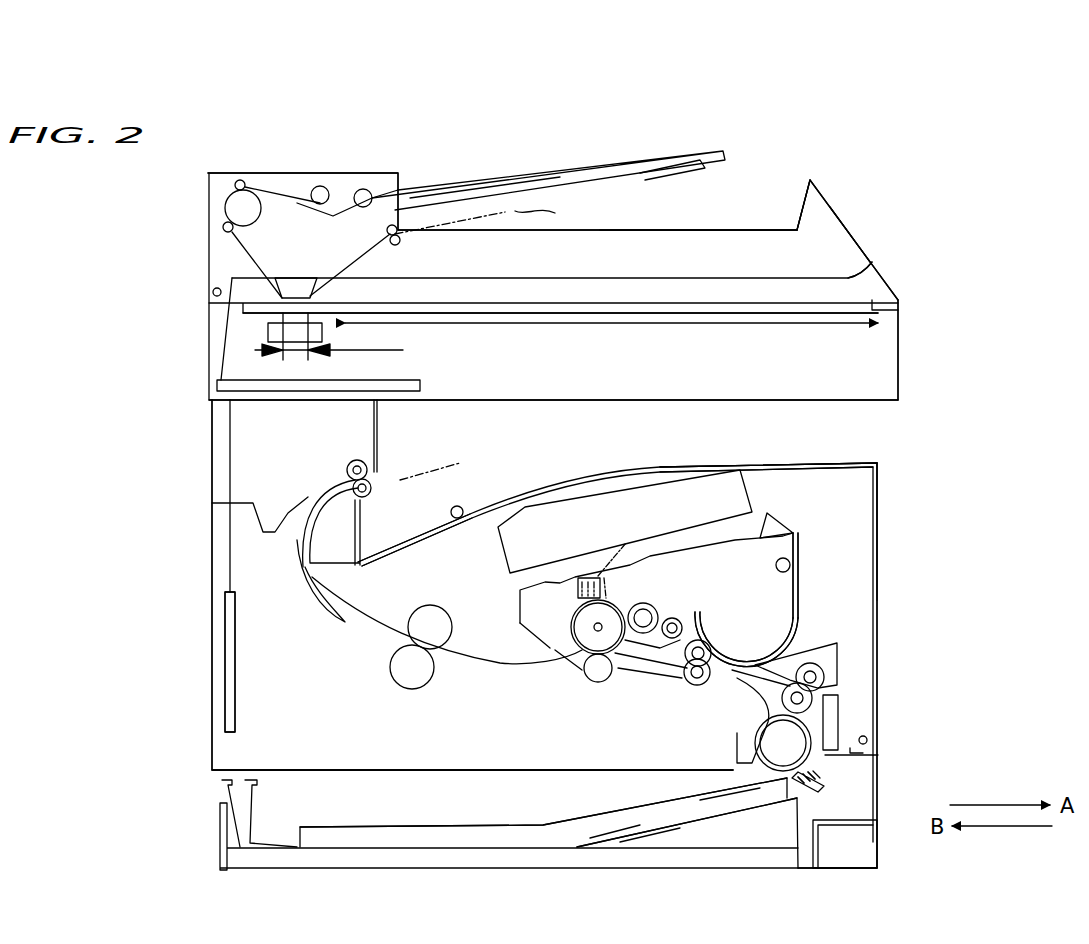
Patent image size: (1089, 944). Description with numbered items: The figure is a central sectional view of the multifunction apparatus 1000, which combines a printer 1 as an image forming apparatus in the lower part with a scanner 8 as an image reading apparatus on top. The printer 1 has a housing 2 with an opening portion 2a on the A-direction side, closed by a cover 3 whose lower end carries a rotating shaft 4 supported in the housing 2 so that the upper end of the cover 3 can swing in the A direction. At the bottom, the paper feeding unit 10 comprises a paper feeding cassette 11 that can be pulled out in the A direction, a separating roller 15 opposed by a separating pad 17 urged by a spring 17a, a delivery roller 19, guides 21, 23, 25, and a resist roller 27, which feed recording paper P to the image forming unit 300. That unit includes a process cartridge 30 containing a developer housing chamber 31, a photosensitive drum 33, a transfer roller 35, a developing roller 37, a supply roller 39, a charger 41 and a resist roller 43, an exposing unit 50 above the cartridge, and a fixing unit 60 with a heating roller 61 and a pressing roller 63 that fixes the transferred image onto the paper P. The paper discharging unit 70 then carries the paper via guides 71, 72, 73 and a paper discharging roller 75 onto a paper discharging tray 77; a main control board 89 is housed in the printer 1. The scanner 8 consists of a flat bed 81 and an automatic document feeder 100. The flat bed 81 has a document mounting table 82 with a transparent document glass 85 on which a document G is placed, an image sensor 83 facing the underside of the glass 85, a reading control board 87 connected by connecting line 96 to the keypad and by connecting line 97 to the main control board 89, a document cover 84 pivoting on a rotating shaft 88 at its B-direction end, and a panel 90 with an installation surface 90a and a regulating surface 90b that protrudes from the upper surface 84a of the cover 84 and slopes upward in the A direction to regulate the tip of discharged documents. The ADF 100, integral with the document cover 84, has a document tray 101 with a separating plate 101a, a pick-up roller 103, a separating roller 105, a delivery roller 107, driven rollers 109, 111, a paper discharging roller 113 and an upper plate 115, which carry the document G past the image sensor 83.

The printer 1 is at (893, 618).
The housing 2 is at (212, 713).
The opening portion 2a is at (865, 468).
The cover 3 is at (878, 507).
The rotating shaft 4 is at (868, 740).
The scanner 8 is at (917, 294).
The paper feeding unit 10 is at (628, 766).
The paper feeding cassette 11 is at (878, 810).
The separating roller 15 is at (802, 734).
The separating pad 17 is at (816, 766).
The spring 17a is at (816, 792).
The delivery roller 19 is at (824, 673).
The guide 21 is at (813, 694).
The guide 23 is at (817, 660).
The guide 25 is at (768, 703).
The resist roller 27 is at (692, 684).
The process cartridge 30 is at (823, 588).
The developer housing chamber 31 is at (797, 562).
The photosensitive drum 33 is at (590, 625).
The transfer roller 35 is at (596, 683).
The developing roller 37 is at (646, 609).
The supply roller 39 is at (675, 622).
The charger 41 is at (597, 574).
The resist roller 43 is at (705, 648).
The exposing unit 50 is at (705, 485).
The fixing unit 60 is at (446, 663).
The heating roller 61 is at (428, 612).
The pressing roller 63 is at (405, 673).
The paper discharging unit 70 is at (258, 617).
The guide 71 is at (313, 612).
The guide 72 is at (333, 436).
The guide 73 is at (330, 531).
The paper discharging roller 75 is at (368, 480).
The paper discharging tray 77 is at (459, 518).
The flat bed 81 is at (852, 403).
The document mounting table 82 is at (888, 376).
The image sensor 83 is at (290, 332).
The document cover 84 is at (750, 241).
The upper surface 84a is at (698, 229).
The document glass 85 is at (654, 302).
The reading control board 87 is at (216, 386).
The rotating shaft 88 is at (212, 292).
The main control board 89 is at (236, 700).
The panel 90 is at (826, 196).
The installation surface 90a is at (846, 224).
The regulating surface 90b is at (799, 196).
The connecting line 96 is at (864, 262).
The connecting line 97 is at (231, 471).
The automatic document feeder 100 is at (289, 172).
The document tray 101 is at (612, 168).
The separating plate 101a is at (335, 212).
The pick-up roller 103 is at (367, 189).
The separating roller 105 is at (320, 186).
The delivery roller 107 is at (240, 207).
The driven roller 109 is at (241, 179).
The driven roller 111 is at (223, 228).
The paper discharging roller 113 is at (400, 236).
The upper plate 115 is at (286, 290).
The image forming unit 300 is at (538, 690).
The multifunction apparatus 1000 is at (945, 467).
The document G is at (680, 151).
The recording paper P is at (588, 826).